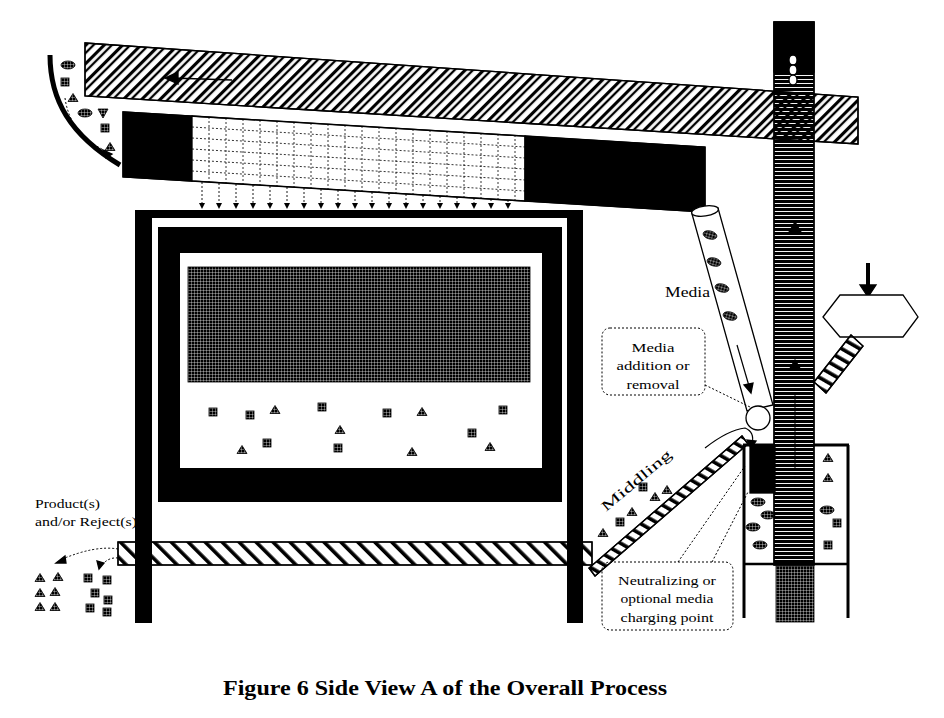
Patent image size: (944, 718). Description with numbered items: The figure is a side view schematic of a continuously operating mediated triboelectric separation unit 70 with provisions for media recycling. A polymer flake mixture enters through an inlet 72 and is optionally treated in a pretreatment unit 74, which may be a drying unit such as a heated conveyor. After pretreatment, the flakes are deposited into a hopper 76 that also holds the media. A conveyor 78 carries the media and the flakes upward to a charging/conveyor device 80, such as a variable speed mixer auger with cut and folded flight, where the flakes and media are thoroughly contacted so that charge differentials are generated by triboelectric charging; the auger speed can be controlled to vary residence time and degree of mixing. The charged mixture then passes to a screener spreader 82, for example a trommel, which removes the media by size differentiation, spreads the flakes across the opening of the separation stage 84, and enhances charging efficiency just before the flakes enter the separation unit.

The mediated triboelectric separation unit 70 is at (104, 299).
The inlet 72 is at (851, 345).
The pretreatment unit 74 is at (893, 339).
The hopper 76 is at (850, 470).
The conveyor 78 is at (818, 417).
The charging/conveyor device 80 is at (566, 76).
The screener spreader 82 is at (190, 183).
The separation stage 84 is at (160, 208).